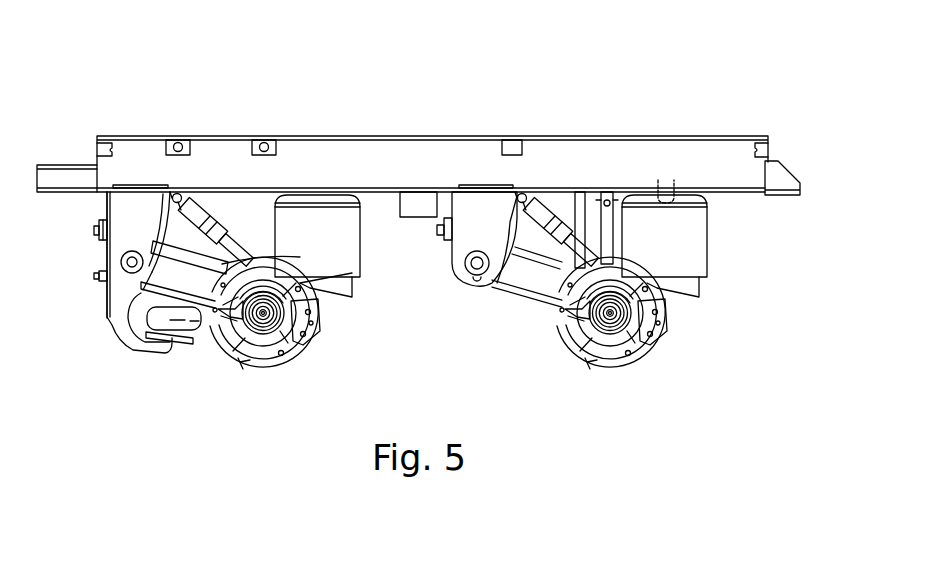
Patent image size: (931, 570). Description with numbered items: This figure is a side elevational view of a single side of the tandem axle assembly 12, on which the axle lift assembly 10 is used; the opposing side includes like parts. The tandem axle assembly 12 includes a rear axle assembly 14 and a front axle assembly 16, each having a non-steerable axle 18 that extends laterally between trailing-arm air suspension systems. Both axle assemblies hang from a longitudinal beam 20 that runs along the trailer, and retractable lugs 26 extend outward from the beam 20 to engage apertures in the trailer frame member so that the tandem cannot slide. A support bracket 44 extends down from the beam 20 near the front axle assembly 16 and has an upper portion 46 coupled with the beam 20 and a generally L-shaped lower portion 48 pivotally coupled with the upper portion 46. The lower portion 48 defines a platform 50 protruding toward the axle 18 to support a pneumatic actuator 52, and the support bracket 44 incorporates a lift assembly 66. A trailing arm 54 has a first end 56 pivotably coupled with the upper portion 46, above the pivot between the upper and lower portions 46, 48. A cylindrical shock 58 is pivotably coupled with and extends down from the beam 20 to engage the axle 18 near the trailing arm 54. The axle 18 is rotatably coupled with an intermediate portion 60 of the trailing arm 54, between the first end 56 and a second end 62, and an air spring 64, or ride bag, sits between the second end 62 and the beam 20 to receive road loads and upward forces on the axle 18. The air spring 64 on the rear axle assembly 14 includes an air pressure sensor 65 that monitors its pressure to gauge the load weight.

The axle lift assembly 10 is at (142, 388).
The tandem axle assembly 12 is at (566, 93).
The rear axle assembly 14 is at (684, 347).
The front axle assembly 16 is at (338, 335).
The non-steerable axle 18 is at (265, 313).
The longitudinal beam 20 is at (443, 135).
The retractable lug 26 is at (177, 132).
The support bracket 44 is at (88, 277).
The upper portion 46 is at (128, 227).
The lower portion 48 is at (110, 308).
The platform 50 is at (193, 330).
The pneumatic actuator 52 is at (195, 324).
The trailing arm 54 is at (266, 245).
The first end 56 is at (181, 249).
The cylindrical shock 58 is at (218, 266).
The intermediate portion 60 is at (264, 247).
The second end 62 is at (376, 285).
The air spring 64 is at (358, 250).
The air pressure sensor 65 is at (668, 178).
The lift assembly 66 is at (110, 358).